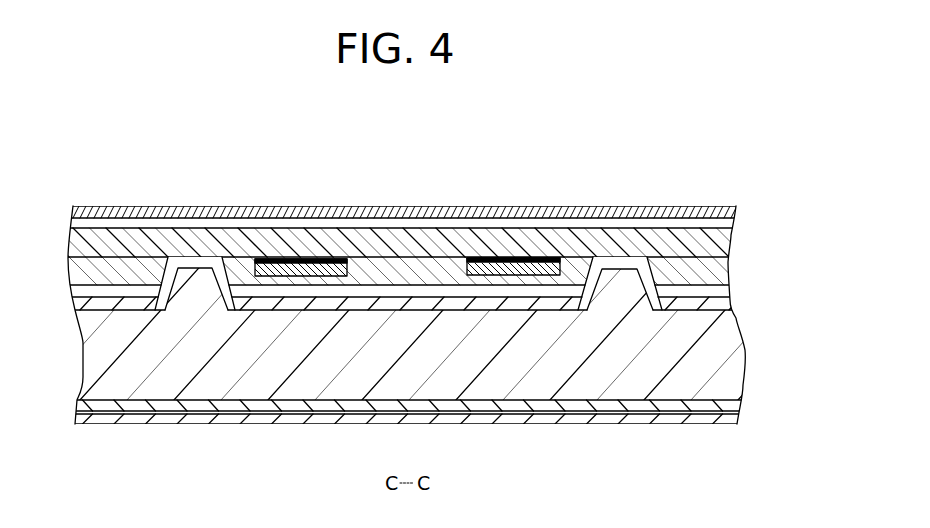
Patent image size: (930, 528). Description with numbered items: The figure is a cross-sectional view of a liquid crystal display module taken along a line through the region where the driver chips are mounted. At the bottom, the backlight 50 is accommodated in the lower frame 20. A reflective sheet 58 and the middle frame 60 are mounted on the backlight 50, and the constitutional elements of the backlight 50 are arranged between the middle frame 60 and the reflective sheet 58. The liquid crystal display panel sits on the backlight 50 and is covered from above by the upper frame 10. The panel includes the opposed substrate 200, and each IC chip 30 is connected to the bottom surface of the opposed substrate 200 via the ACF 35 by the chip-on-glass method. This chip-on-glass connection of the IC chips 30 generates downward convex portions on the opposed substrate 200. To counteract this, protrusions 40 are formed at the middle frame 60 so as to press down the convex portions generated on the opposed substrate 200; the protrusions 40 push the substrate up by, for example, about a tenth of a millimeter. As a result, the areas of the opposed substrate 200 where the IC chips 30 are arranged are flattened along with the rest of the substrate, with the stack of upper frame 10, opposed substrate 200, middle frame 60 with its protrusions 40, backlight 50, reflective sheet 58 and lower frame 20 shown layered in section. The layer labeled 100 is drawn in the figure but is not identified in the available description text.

The upper frame 10 is at (676, 212).
The opposed substrate 200 is at (403, 240).
The first insulating layer 100 is at (455, 270).
The IC chip 30 is at (514, 265).
The ACF 35 is at (540, 259).
The protrusion 40 is at (596, 295).
The middle frame 60 is at (518, 303).
The backlight 50 is at (318, 382).
The reflective sheet 58 is at (196, 405).
The lower frame 20 is at (261, 418).